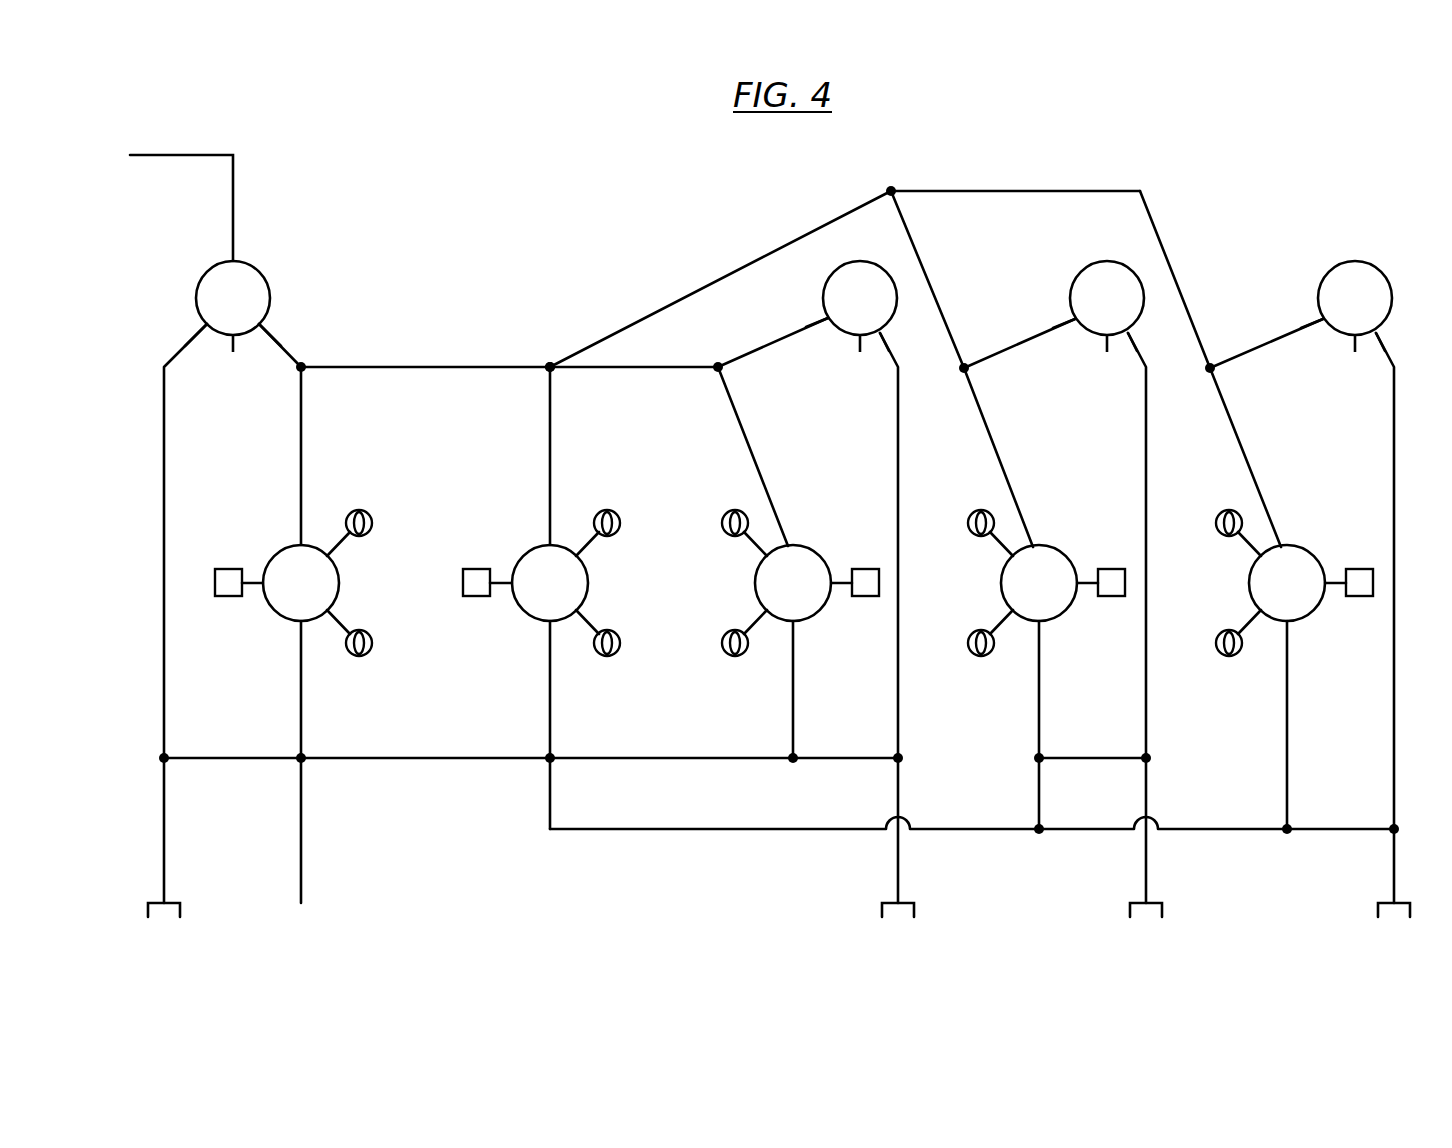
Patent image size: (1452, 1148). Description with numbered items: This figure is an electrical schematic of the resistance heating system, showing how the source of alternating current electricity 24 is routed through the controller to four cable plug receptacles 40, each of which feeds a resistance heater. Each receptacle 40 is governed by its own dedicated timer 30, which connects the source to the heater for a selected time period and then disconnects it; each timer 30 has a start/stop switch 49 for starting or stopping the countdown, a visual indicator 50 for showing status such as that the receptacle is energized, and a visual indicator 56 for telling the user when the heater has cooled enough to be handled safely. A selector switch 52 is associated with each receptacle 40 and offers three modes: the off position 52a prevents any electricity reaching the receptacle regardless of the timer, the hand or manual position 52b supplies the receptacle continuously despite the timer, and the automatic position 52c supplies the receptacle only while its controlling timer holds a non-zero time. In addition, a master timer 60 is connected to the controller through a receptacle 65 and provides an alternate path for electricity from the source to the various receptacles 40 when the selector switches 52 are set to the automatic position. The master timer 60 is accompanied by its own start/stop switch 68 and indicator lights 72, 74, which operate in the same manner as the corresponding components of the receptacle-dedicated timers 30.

The source of alternating current electricity 24 is at (170, 155).
The timer 30 is at (286, 548).
The cable plug receptacle 40 is at (172, 902).
The start/stop switch 49 is at (228, 597).
The visual indicator 50 is at (368, 514).
The selector switch 52 is at (260, 272).
The off position 52a is at (232, 340).
The hand or manual position 52b is at (205, 328).
The automatic position 52c is at (262, 328).
The visual indicator 56 is at (368, 653).
The master timer 60 is at (535, 549).
The receptacle 65 is at (554, 347).
The start/stop switch 68 is at (476, 597).
The indicator light 72 is at (617, 514).
The indicator light 74 is at (617, 653).